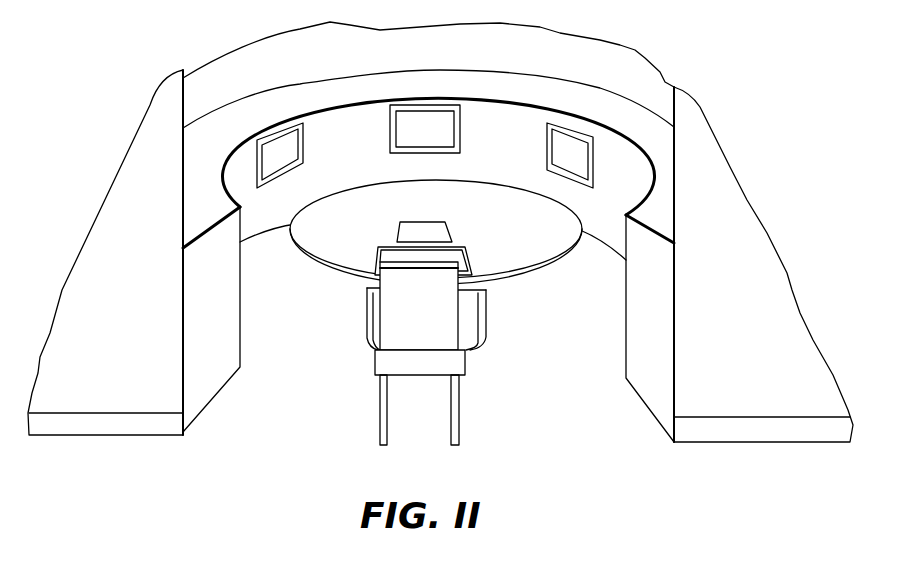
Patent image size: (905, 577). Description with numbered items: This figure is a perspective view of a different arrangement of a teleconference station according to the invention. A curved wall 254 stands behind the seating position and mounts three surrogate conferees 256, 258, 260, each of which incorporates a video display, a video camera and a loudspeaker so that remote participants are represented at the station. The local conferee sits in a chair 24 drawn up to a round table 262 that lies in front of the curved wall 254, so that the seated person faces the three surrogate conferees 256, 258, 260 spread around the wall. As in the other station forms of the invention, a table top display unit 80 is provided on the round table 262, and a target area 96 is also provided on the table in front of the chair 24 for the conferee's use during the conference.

The chair 24 is at (392, 308).
The table top display unit 80 is at (444, 227).
The target area 96 is at (388, 254).
The curved wall 254 is at (350, 117).
The surrogate conferee 256 is at (278, 160).
The surrogate conferee 258 is at (440, 127).
The surrogate conferee 260 is at (585, 167).
The round table 262 is at (533, 253).